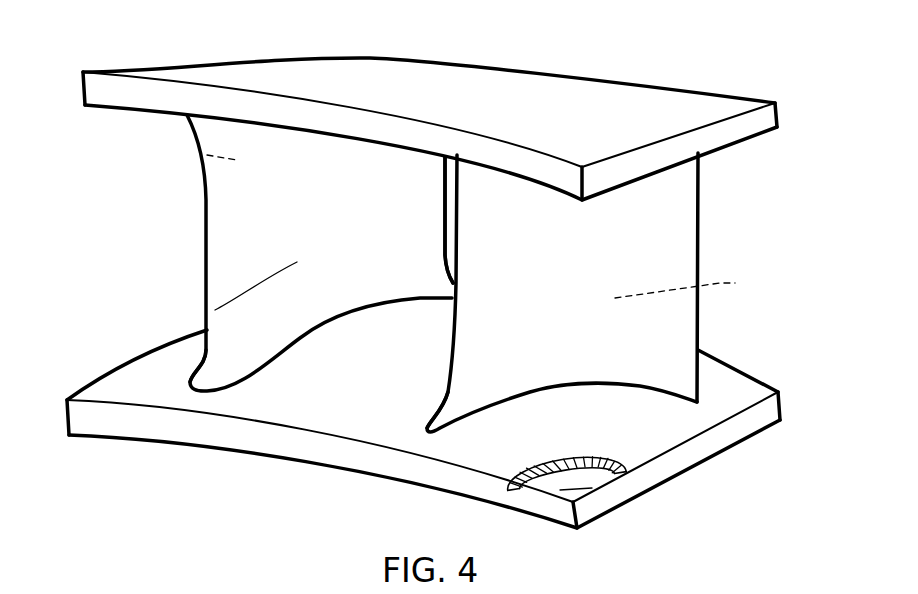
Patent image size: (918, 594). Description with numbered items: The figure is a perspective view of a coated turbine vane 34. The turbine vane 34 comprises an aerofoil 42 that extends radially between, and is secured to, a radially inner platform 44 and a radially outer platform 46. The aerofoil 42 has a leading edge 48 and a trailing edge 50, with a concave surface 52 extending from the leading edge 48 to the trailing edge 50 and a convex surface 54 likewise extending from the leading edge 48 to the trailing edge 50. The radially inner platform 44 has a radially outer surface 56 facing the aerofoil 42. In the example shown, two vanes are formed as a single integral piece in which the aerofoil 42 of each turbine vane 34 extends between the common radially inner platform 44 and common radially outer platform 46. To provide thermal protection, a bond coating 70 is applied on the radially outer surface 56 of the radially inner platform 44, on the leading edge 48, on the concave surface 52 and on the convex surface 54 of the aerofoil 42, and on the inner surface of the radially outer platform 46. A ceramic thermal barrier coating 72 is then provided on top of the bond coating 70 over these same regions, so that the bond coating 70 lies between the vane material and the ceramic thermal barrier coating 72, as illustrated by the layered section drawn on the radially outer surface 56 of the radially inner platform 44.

The turbine vane 34 is at (451, 273).
The aerofoil 42 is at (225, 196).
The radially inner platform 44 is at (293, 408).
The radially outer platform 46 is at (387, 128).
The leading edge 48 is at (205, 293).
The trailing edge 50 is at (447, 218).
The concave surface 52 is at (215, 310).
The convex surface 54 is at (200, 152).
The radially outer surface 56 is at (575, 490).
The bond coating 70 is at (607, 470).
The ceramic thermal barrier coating 72 is at (233, 212).